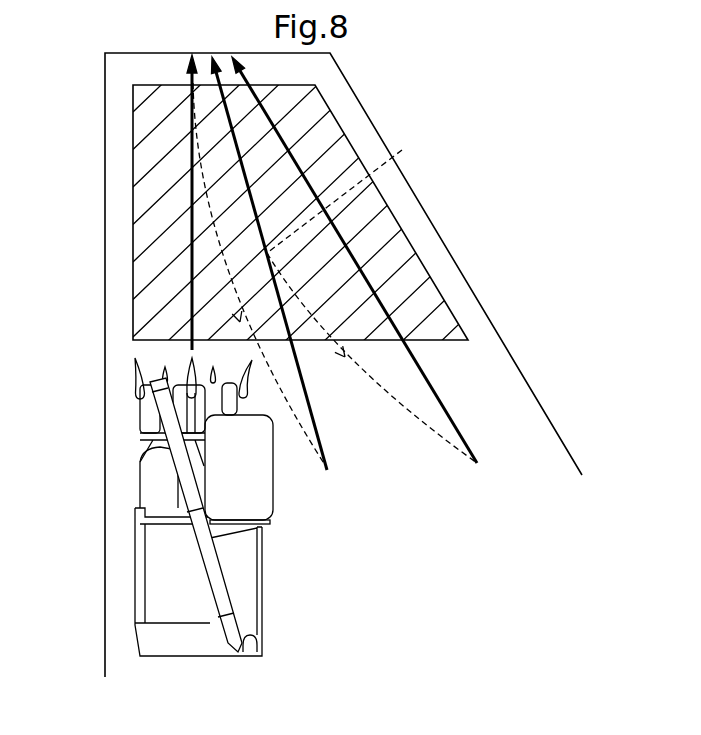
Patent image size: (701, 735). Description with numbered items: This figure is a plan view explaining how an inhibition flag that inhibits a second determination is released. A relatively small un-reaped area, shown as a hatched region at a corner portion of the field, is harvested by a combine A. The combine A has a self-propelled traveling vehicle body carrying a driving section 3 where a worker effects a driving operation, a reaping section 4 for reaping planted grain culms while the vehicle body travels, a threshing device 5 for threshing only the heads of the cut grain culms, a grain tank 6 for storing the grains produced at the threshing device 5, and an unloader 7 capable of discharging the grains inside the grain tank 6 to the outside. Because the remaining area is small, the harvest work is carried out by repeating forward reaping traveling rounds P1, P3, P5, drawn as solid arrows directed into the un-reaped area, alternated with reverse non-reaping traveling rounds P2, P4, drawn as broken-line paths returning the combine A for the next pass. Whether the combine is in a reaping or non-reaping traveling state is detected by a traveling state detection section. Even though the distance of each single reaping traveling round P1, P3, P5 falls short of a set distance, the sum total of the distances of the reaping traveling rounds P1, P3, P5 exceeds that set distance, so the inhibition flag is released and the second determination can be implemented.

The driving section 3 is at (267, 483).
The reaping section 4 is at (150, 413).
The threshing device 5 is at (158, 562).
The grain tank 6 is at (250, 568).
The unloader 7 is at (178, 487).
The combine A is at (293, 535).
The reaping traveling round P1 is at (192, 263).
The non-reaping traveling round P2 is at (205, 215).
The reaping traveling round P3 is at (308, 395).
The non-reaping traveling round P4 is at (372, 298).
The reaping traveling round P5 is at (335, 226).